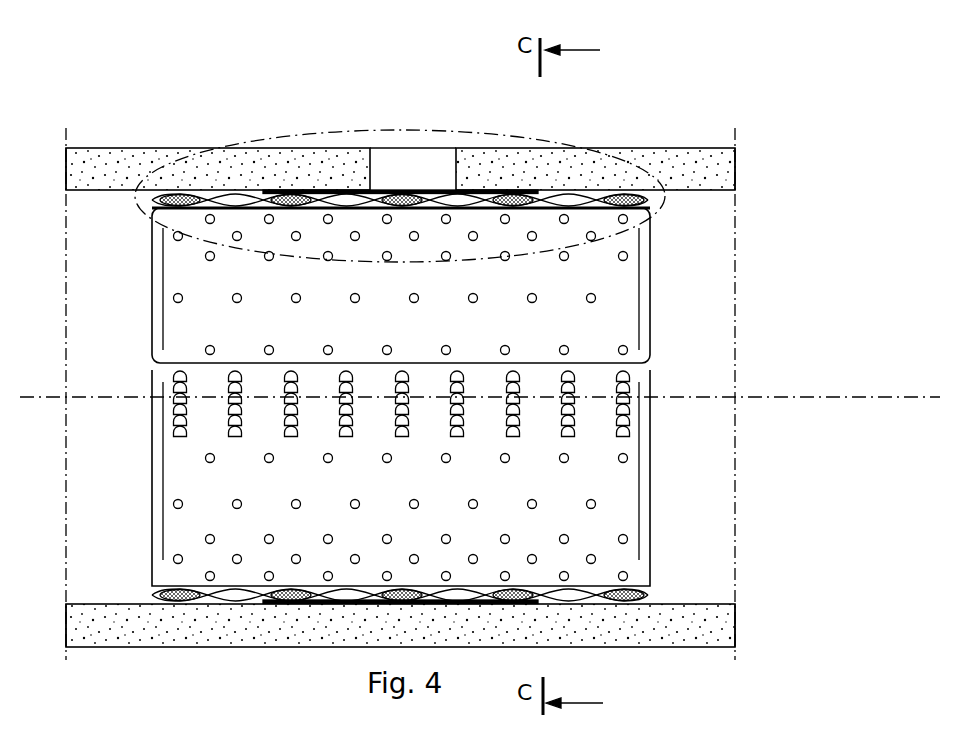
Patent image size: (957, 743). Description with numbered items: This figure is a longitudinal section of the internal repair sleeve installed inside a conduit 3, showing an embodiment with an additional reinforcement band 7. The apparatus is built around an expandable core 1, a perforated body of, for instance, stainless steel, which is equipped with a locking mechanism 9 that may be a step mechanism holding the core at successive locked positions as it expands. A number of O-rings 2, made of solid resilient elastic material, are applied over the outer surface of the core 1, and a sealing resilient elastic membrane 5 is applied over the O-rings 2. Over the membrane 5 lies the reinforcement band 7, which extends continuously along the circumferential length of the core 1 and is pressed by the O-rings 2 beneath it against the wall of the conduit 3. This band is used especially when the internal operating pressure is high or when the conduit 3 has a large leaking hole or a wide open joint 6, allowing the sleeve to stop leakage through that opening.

The expandable core 1 is at (661, 272).
The O-rings 2 is at (631, 180).
The conduit 3 is at (703, 156).
The membrane 5 is at (208, 182).
The open joint 6 is at (403, 159).
The reinforcement band 7 is at (447, 208).
The locking mechanism 9 is at (638, 380).